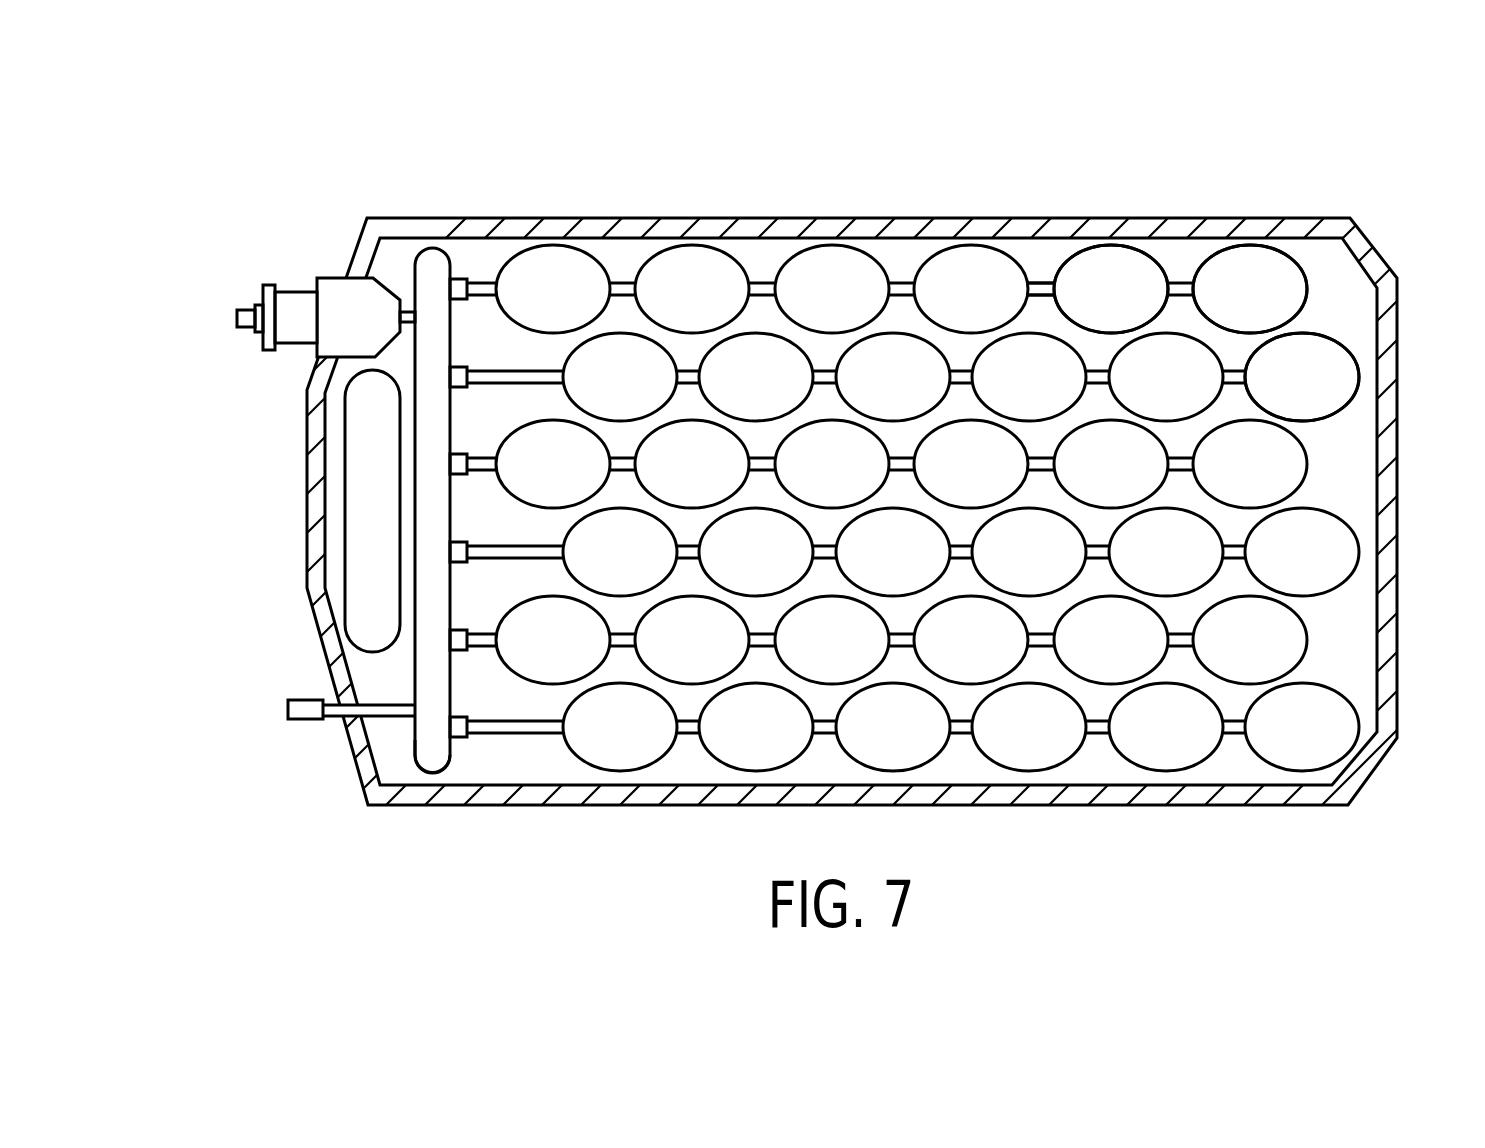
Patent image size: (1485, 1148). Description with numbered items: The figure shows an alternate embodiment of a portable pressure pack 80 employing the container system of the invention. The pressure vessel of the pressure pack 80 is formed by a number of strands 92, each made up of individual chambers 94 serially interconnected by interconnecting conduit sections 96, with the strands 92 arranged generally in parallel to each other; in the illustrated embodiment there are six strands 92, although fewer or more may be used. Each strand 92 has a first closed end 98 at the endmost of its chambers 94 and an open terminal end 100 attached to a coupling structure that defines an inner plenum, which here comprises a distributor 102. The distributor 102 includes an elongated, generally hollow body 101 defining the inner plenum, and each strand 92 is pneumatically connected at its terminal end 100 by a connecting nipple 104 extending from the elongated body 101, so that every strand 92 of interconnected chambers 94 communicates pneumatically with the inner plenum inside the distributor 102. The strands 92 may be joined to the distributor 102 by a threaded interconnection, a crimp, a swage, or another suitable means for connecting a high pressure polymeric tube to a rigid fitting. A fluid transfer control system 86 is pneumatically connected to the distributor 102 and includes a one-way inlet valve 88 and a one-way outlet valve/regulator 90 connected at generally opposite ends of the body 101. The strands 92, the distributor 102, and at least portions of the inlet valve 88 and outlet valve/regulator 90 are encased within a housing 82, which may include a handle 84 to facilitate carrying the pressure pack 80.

The portable pressure pack 80 is at (1293, 168).
The housing 82 is at (1372, 232).
The handle 84 is at (352, 572).
The fluid transfer control system 86 is at (308, 318).
The inlet valve 88 is at (297, 714).
The outlet valve/regulator 90 is at (292, 346).
The strand 92 is at (1360, 344).
The chamber 94 is at (1118, 245).
The interconnecting conduit section 96 is at (1041, 281).
The first closed end 98 is at (1307, 280).
The open terminal end 100 is at (474, 286).
The elongated body 101 is at (427, 754).
The distributor 102 is at (410, 757).
The connecting nipple 104 is at (456, 738).